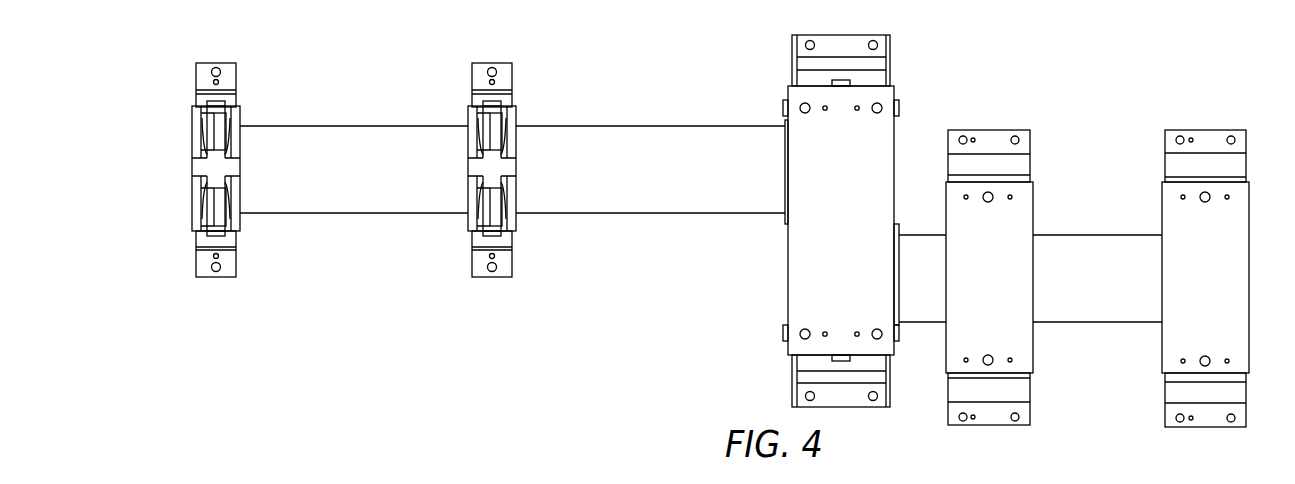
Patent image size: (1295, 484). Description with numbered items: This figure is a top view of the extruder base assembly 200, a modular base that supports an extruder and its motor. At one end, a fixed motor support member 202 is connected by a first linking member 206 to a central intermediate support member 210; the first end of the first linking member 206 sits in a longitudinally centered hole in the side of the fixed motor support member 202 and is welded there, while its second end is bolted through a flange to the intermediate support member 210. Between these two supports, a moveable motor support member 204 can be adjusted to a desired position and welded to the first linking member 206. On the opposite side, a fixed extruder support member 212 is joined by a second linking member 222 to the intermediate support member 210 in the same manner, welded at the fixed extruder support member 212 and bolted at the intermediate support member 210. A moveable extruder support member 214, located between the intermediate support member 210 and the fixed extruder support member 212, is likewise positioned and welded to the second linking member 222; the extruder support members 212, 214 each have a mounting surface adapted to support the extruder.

The extruder base assembly 200 is at (211, 468).
The fixed motor support member 202 is at (1211, 127).
The moveable motor support member 204 is at (991, 124).
The first linking member 206 is at (409, 75).
The intermediate support member 210 is at (882, 28).
The fixed extruder support member 212 is at (220, 56).
The moveable extruder support member 214 is at (500, 56).
The second linking member 222 is at (628, 138).